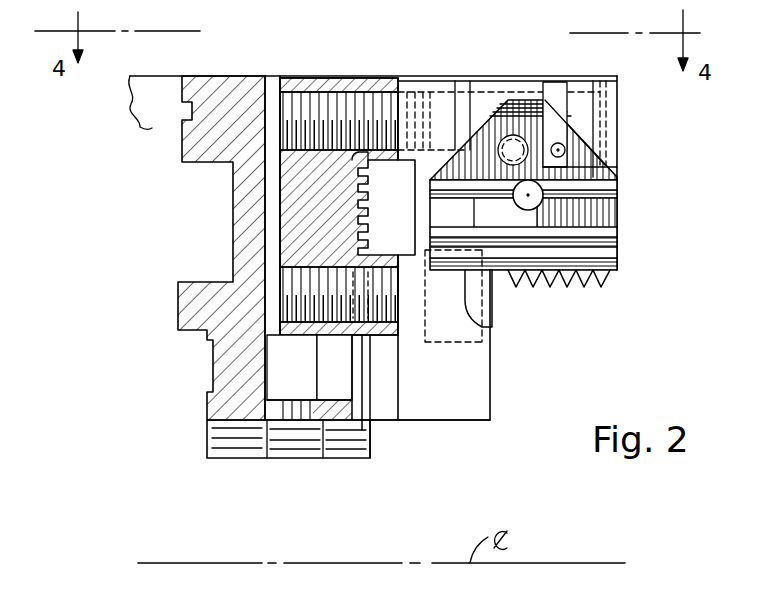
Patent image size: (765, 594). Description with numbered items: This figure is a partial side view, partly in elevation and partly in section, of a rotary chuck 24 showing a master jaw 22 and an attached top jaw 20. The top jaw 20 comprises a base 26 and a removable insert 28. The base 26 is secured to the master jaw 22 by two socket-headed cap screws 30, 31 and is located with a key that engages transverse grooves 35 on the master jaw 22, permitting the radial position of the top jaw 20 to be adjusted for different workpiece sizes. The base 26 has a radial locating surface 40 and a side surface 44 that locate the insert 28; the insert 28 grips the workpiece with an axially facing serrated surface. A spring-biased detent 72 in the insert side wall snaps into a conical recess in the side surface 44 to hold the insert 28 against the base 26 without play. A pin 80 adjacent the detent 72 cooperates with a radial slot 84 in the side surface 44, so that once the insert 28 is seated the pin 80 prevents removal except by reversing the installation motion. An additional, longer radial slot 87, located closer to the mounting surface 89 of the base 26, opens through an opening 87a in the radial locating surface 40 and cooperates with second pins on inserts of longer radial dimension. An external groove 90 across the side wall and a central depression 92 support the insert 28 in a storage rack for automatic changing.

The top jaw 20 is at (501, 68).
The master jaw 22 is at (332, 78).
The rotary chuck 24 is at (157, 76).
The base 26 is at (448, 430).
The removable insert 28 is at (605, 217).
The socket-headed cap screw 30 is at (598, 113).
The socket-headed cap screw 31 is at (481, 338).
The transverse grooves 35 is at (370, 201).
The radial locating surface 40 is at (491, 366).
The side surface 44 is at (442, 90).
The detent 72 is at (497, 165).
The pin 80 is at (565, 148).
The radial slot 84 is at (565, 98).
The additional radial slot 87 is at (470, 88).
The opening 87a is at (481, 316).
The mounting surface 89 is at (395, 402).
The external groove 90 is at (474, 199).
The central depression 92 is at (526, 201).